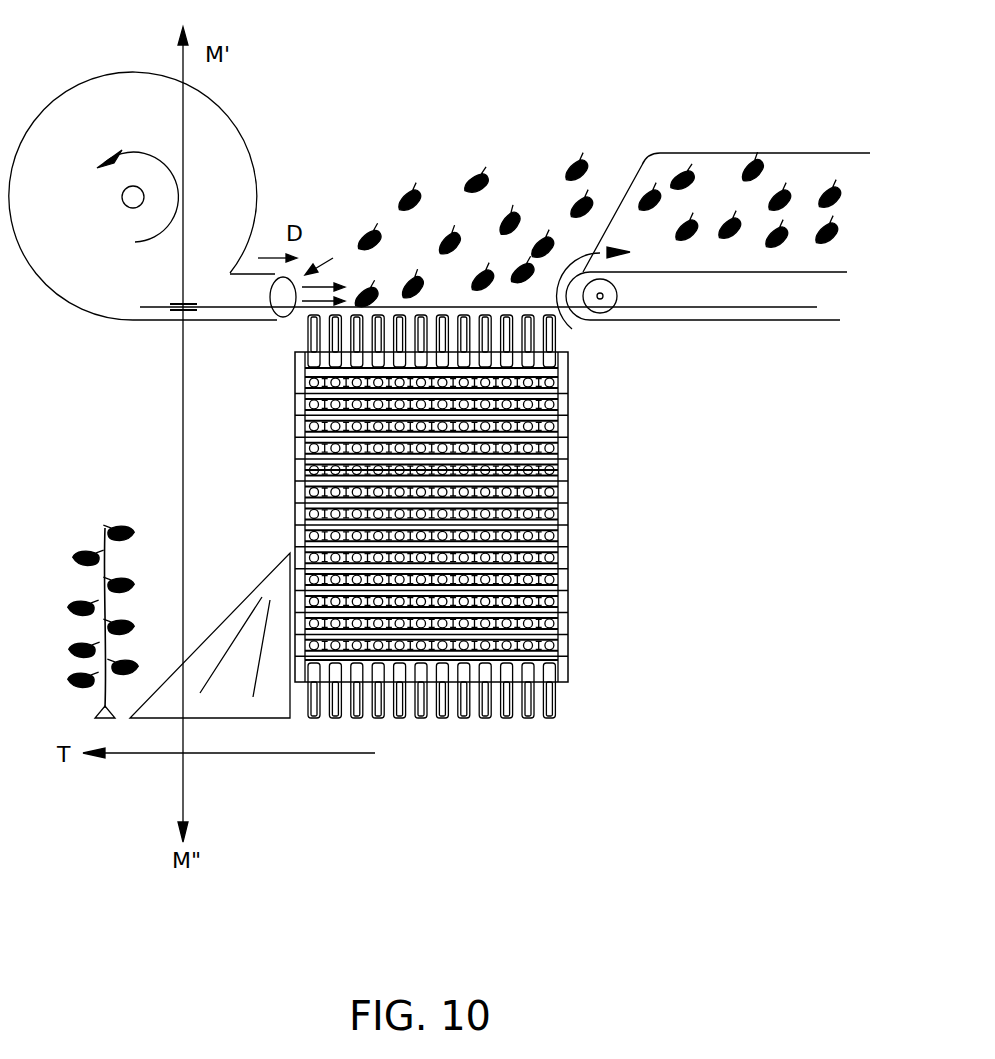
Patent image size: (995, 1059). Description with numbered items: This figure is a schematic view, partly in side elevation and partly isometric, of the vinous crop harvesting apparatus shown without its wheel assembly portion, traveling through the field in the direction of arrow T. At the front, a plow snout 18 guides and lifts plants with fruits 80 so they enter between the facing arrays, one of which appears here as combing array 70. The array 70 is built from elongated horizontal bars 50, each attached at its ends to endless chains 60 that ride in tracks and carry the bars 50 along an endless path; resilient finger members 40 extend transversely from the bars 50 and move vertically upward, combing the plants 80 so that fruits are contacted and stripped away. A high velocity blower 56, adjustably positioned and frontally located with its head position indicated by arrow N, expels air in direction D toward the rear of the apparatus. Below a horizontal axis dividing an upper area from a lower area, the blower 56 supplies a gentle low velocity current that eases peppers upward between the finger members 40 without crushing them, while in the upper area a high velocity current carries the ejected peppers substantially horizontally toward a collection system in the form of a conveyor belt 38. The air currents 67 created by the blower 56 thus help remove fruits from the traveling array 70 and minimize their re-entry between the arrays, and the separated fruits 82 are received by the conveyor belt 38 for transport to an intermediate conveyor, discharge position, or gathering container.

The plow snout 18 is at (222, 637).
The conveyor belt 38 is at (773, 288).
The resilient finger members 40 is at (307, 326).
The elongated horizontal bars 50 is at (562, 430).
The high velocity blower 56 is at (210, 131).
The endless chains 60 is at (563, 550).
The air currents 67 is at (307, 268).
The combing array 70 is at (555, 490).
The plants with fruits 80 is at (100, 530).
The separated fruits 82 is at (403, 197).